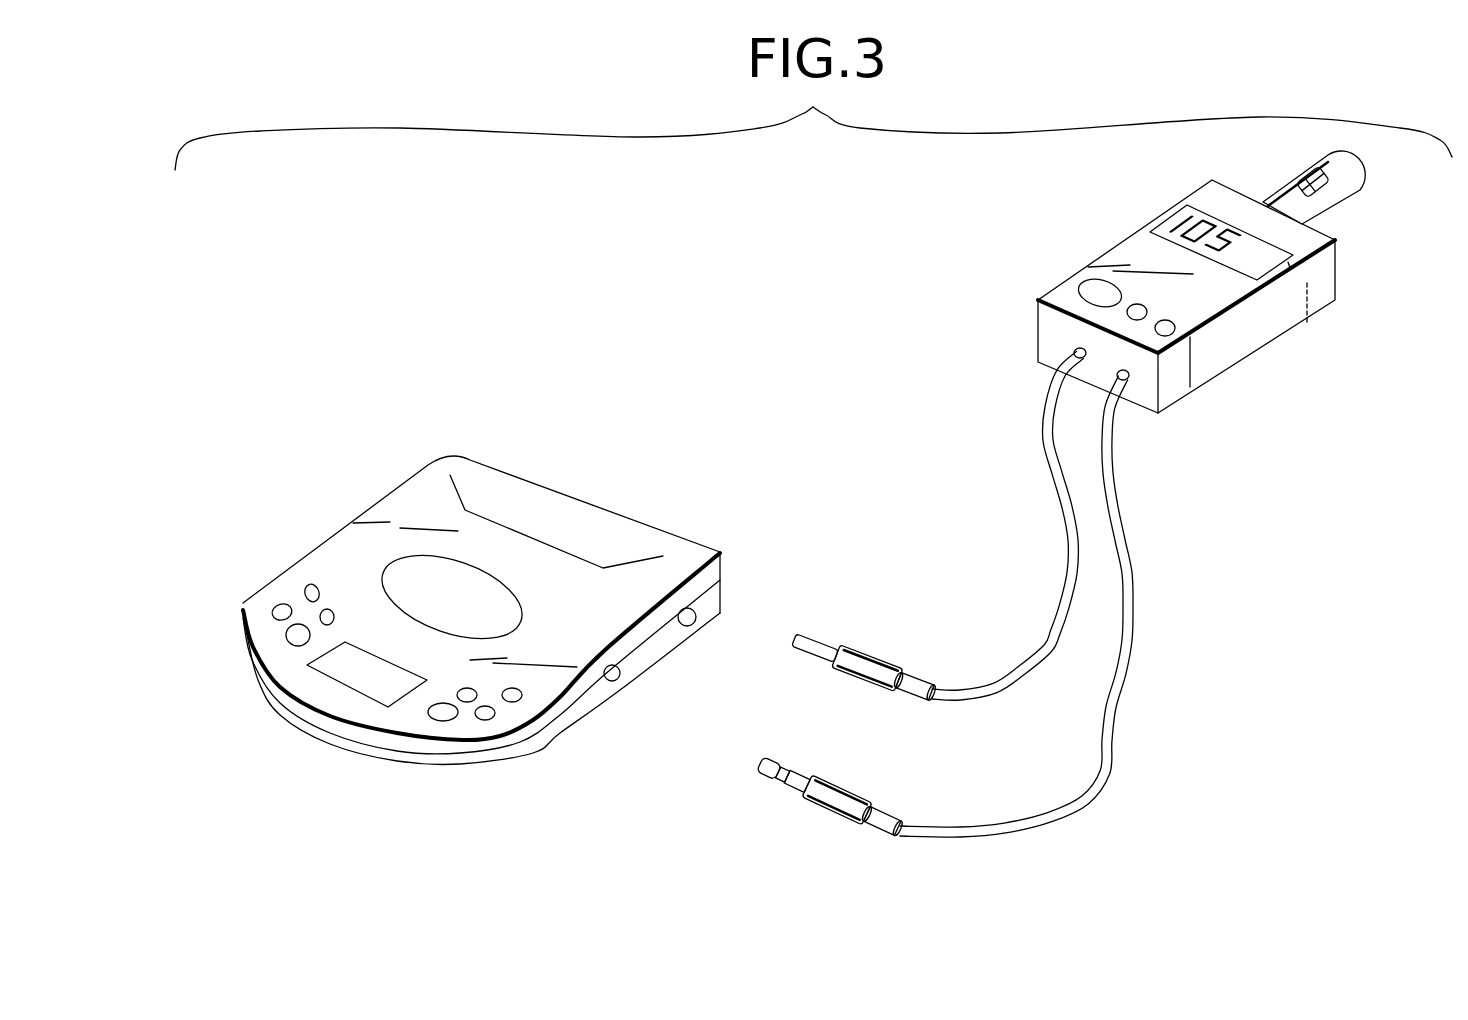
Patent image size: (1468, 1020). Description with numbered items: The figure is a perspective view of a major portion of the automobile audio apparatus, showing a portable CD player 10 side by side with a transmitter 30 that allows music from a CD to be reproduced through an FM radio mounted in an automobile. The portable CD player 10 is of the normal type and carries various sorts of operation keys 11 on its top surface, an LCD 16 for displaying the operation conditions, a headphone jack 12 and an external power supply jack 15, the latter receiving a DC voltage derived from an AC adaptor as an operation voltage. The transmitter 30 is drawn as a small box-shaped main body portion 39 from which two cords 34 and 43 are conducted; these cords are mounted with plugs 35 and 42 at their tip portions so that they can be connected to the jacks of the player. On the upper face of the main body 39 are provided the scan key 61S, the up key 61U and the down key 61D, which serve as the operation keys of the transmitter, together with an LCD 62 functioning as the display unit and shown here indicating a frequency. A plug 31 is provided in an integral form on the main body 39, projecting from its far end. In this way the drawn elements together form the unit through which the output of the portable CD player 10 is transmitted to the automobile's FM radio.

The portable CD player 10 is at (240, 505).
The operation keys 11 is at (279, 621).
The headphone jack 12 is at (613, 682).
The external power supply jack 15 is at (695, 615).
The LCD 16 is at (352, 682).
The transmitter 30 is at (930, 232).
The plug 31 is at (1340, 203).
The cord 34 is at (997, 707).
The plug 35 is at (813, 660).
The main body portion 39 is at (1250, 349).
The plug 42 is at (782, 792).
The cord 43 is at (1003, 839).
The scan key 61S is at (1087, 296).
The up key 61U is at (1130, 318).
The down key 61D is at (1168, 338).
The LCD 62 is at (1290, 268).